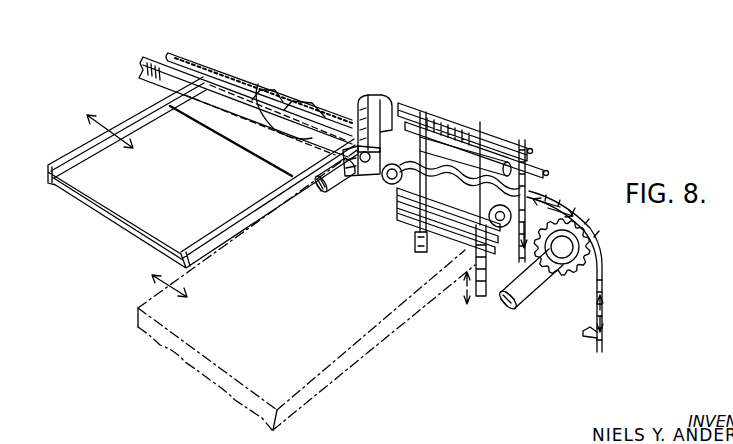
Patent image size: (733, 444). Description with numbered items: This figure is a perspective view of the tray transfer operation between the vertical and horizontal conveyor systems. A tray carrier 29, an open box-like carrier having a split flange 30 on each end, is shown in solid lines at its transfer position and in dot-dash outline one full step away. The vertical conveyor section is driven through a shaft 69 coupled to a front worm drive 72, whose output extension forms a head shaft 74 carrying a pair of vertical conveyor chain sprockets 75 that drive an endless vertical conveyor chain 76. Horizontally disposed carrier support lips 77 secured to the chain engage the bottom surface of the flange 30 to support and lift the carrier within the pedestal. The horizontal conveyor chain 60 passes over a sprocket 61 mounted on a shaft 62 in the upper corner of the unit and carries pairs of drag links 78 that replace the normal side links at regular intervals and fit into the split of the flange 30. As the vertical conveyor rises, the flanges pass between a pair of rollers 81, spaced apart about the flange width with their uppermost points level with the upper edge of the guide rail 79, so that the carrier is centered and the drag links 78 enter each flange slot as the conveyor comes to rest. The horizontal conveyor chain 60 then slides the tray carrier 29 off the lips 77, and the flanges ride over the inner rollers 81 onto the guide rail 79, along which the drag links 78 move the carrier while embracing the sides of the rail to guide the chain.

The tray carrier 29 is at (110, 207).
The split flange 30 is at (300, 101).
The horizontal conveyor chain 60 is at (223, 71).
The sprocket 61 is at (573, 282).
The shaft 62 is at (537, 292).
The shaft 69 is at (338, 185).
The front worm drive 72 is at (382, 100).
The head shaft 74 is at (407, 110).
The vertical conveyor chain sprocket 75 is at (455, 123).
The vertical conveyor chain 76 is at (416, 246).
The carrier support lip 77 is at (548, 171).
The drag link 78 is at (583, 333).
The guide rail 79 is at (158, 57).
The roller 81 is at (392, 184).